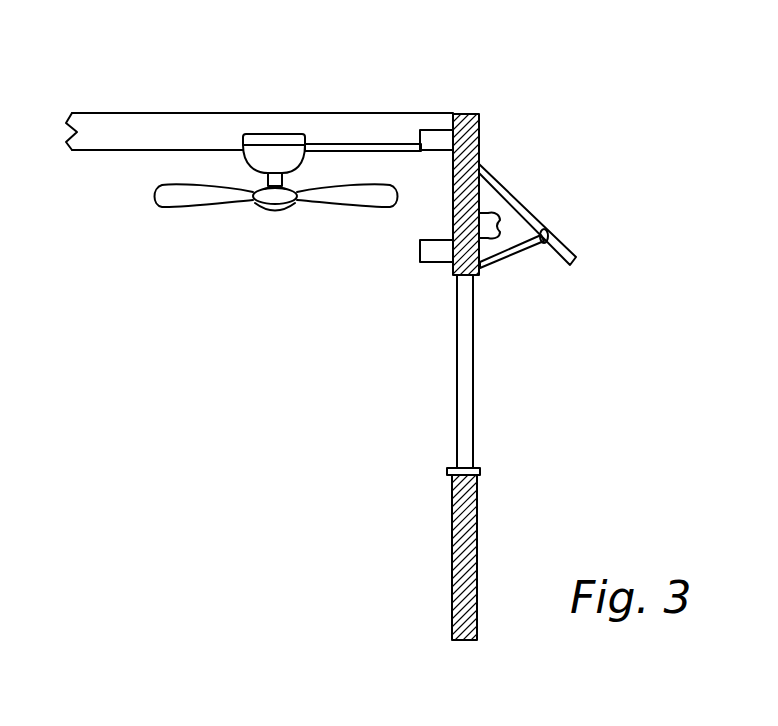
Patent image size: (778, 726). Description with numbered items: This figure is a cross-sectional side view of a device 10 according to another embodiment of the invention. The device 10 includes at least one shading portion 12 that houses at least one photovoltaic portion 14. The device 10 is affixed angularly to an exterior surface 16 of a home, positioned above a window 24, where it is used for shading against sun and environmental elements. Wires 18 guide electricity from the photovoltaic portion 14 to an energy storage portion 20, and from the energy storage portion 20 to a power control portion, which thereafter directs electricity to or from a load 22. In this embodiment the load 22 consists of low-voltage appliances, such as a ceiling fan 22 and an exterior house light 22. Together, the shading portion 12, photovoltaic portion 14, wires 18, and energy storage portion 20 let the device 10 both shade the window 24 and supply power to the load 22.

The device 10 is at (575, 178).
The shading portion 12 is at (548, 250).
The photovoltaic portion 14 is at (560, 247).
The exterior surface 16 is at (480, 126).
The wires 18 is at (330, 143).
The energy storage portion 20 is at (437, 142).
The load 22 is at (255, 206).
The window 24 is at (473, 360).